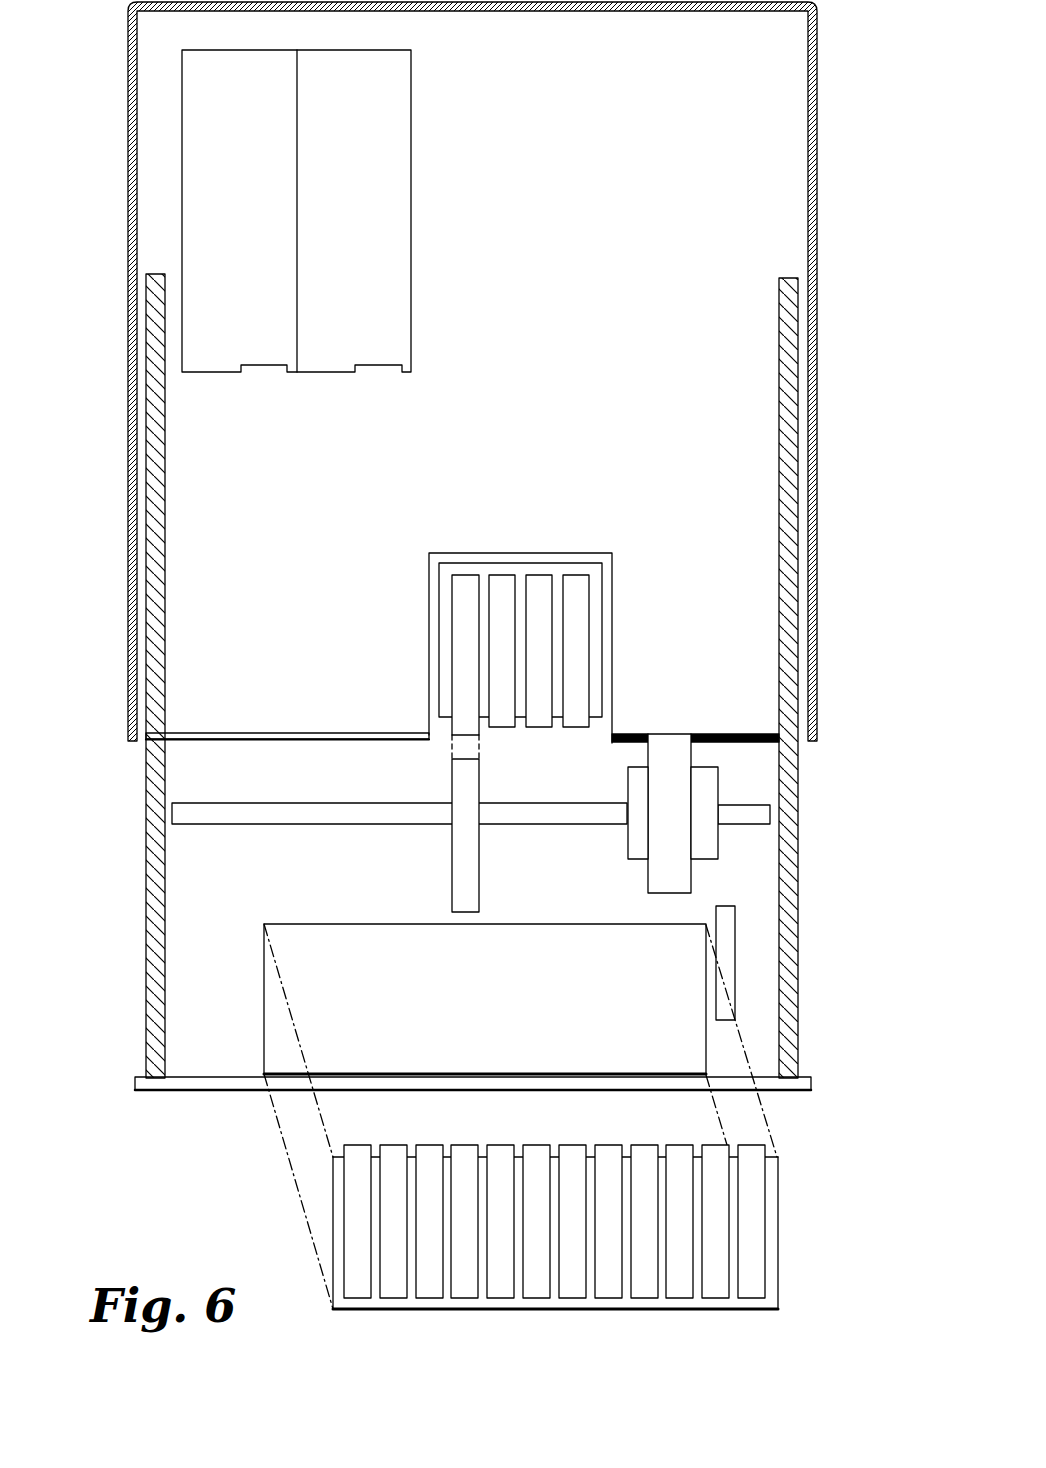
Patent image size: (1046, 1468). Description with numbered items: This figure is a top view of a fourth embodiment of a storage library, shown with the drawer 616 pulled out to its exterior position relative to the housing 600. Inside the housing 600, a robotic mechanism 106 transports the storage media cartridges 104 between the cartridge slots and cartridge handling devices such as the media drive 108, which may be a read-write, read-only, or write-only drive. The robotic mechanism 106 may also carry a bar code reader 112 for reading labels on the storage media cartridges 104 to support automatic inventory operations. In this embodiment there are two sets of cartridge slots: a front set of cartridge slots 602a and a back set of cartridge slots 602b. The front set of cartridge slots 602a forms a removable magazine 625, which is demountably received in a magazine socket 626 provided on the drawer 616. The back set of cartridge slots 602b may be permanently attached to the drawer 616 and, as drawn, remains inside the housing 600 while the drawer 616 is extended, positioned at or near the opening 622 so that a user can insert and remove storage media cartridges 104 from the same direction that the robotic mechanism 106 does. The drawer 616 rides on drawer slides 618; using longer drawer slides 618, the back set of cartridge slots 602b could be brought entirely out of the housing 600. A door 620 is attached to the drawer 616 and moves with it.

The housing 600 is at (818, 236).
The media drive 108 is at (273, 104).
The drawer slides 618 is at (151, 913).
The opening 622 is at (232, 712).
The back set of cartridge slots 602b is at (430, 643).
The robotic mechanism 106 is at (744, 787).
The storage media cartridges 104 is at (466, 791).
The bar code reader 112 is at (727, 950).
The magazine socket 626 is at (262, 958).
The drawer 616 is at (190, 1017).
The door 620 is at (202, 1092).
The removable magazine 625 is at (316, 1216).
The front set of cartridge slots 602a is at (781, 1198).